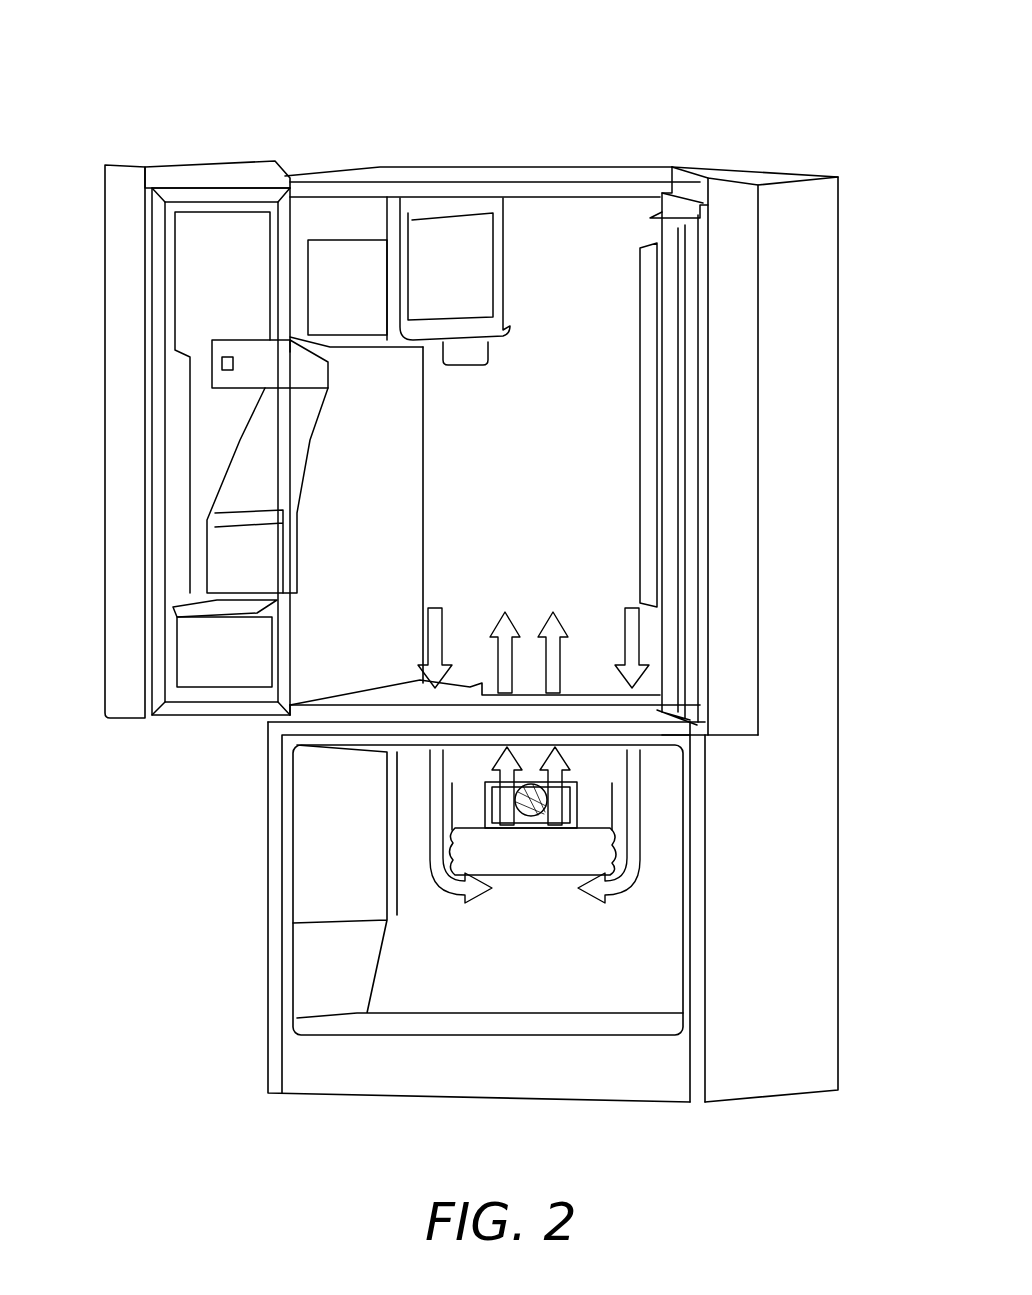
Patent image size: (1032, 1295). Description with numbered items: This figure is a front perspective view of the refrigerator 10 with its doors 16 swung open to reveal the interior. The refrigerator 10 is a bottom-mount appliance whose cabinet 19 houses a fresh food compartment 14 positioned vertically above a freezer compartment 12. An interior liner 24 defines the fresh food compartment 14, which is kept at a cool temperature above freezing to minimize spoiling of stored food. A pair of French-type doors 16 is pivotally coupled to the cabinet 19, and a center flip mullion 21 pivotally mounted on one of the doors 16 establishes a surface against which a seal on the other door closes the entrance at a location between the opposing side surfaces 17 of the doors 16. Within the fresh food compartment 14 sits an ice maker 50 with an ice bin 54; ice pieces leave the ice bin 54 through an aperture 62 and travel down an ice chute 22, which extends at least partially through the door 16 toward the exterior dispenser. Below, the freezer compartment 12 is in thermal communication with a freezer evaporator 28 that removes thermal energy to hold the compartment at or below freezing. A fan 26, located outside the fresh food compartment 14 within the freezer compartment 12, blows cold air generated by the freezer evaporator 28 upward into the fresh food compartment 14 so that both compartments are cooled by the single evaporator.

The refrigerator 10 is at (790, 107).
The freezer compartment 12 is at (486, 914).
The fresh food compartment 14 is at (495, 531).
The doors 16 is at (100, 282).
The opposing side surfaces 17 is at (115, 347).
The cabinet 19 is at (830, 325).
The center flip mullion 21 is at (640, 500).
The ice chute 22 is at (262, 350).
The interior liner 24 is at (600, 218).
The fan 26 is at (540, 800).
The freezer evaporator 28 is at (510, 878).
The ice maker 50 is at (470, 293).
The ice bin 54 is at (347, 268).
The aperture 62 is at (358, 352).